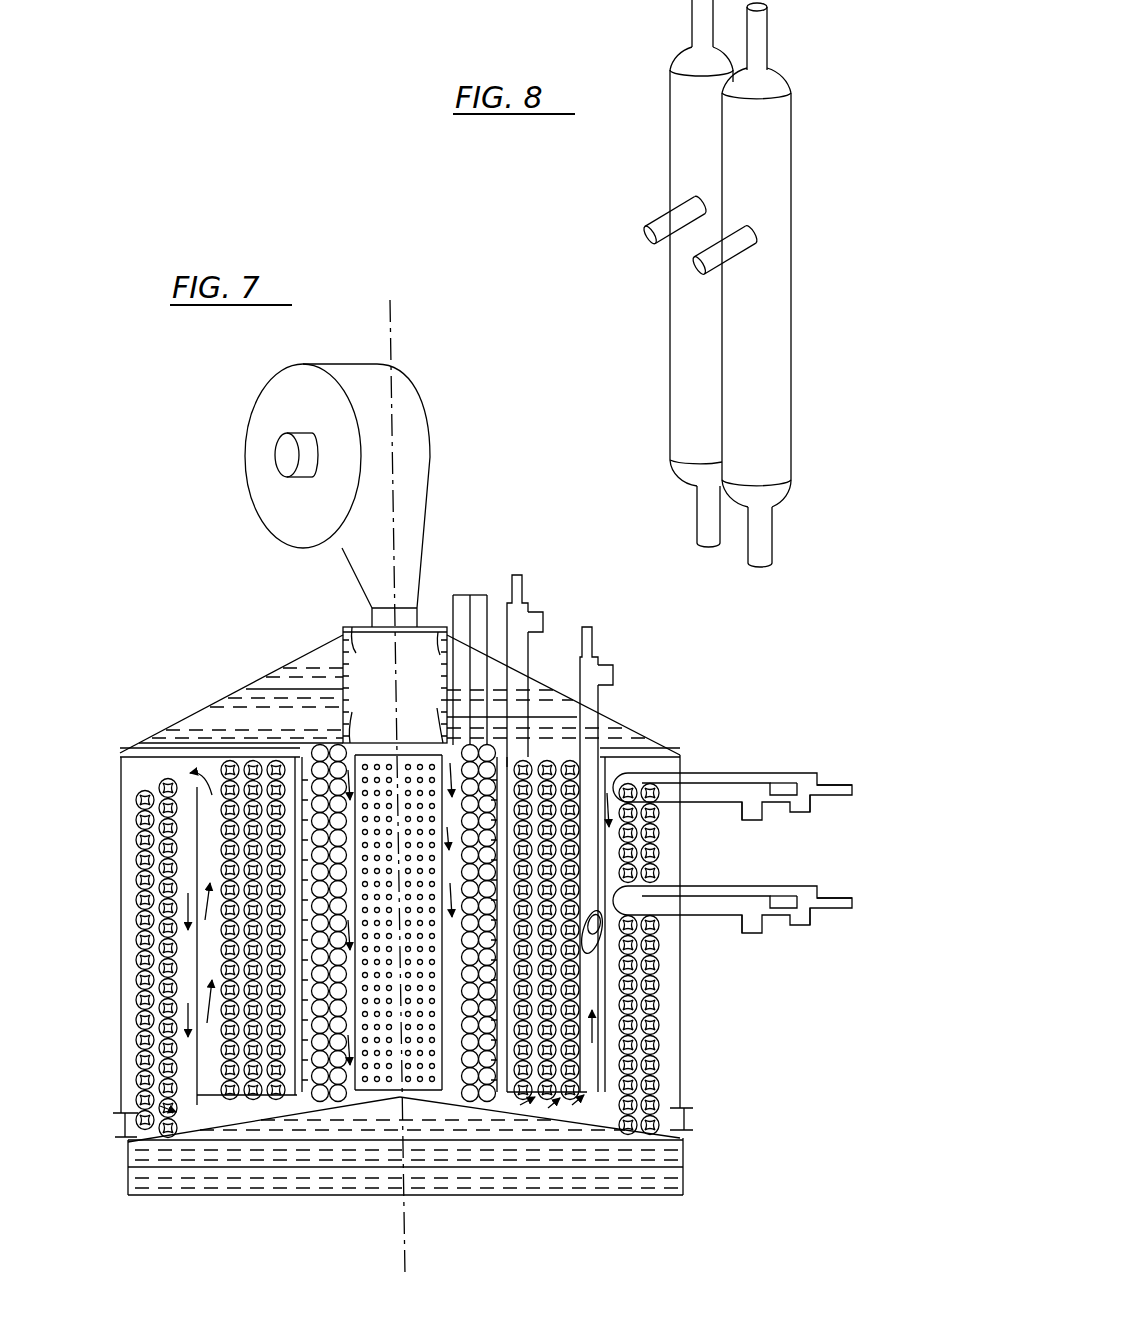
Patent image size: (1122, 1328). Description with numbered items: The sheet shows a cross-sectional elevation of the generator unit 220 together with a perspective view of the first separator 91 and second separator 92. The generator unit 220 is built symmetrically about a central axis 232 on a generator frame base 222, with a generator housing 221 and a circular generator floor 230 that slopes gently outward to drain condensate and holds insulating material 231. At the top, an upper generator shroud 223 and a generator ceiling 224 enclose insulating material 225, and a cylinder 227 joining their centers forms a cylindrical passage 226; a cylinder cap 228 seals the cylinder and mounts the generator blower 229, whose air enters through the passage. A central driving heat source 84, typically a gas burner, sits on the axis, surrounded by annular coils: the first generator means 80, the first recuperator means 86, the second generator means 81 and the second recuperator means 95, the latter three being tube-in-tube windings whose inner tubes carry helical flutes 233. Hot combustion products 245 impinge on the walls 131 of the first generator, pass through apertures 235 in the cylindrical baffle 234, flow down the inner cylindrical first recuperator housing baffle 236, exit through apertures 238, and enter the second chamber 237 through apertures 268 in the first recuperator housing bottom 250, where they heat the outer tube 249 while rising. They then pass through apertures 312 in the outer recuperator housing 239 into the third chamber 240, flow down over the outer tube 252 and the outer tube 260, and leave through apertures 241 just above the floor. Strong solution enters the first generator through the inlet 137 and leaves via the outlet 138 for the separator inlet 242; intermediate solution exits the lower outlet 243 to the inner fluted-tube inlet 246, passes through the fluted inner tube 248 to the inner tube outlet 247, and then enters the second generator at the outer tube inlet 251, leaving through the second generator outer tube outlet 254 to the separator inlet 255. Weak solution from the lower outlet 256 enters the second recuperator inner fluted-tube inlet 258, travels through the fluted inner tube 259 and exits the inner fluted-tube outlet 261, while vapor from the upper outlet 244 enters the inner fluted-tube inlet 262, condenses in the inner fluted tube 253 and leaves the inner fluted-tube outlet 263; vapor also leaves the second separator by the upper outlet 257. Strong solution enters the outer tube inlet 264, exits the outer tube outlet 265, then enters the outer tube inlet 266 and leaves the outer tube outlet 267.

In FIG. 7, the first generator means 80 is at (458, 1080).
In FIG. 7, the second generator means 81 is at (135, 785).
In FIG. 7, the central driving heat source 84 is at (392, 1080).
In FIG. 7, the first recuperator means 86 is at (217, 942).
In FIG. 8, the first separator 91 is at (780, 296).
In FIG. 8, the second separator 92 is at (688, 160).
In FIG. 7, the second recuperator means 95 is at (140, 1027).
In FIG. 7, the walls 131 is at (365, 1075).
In FIG. 7, the inlet 137 is at (478, 595).
In FIG. 7, the outlet 138 is at (460, 592).
In FIG. 7, the generator unit 220 is at (210, 543).
In FIG. 7, the generator housing 221 is at (121, 995).
In FIG. 7, the generator frame base 222 is at (518, 1197).
In FIG. 7, the upper generator shroud 223 is at (200, 712).
In FIG. 7, the generator ceiling 224 is at (155, 752).
In FIG. 7, the insulating material 225 is at (310, 700).
In FIG. 7, the cylindrical passage 226 is at (350, 640).
In FIG. 7, the cylinder 227 is at (335, 690).
In FIG. 7, the cylinder cap 228 is at (362, 650).
In FIG. 7, the generator blower 229 is at (283, 405).
In FIG. 7, the generator floor 230 is at (300, 1112).
In FIG. 7, the insulating material 231 is at (340, 1100).
In FIG. 7, the central axis 232 is at (407, 1263).
In FIG. 7, the helical flutes 233 is at (598, 930).
In FIG. 7, the cylindrical baffle 234 is at (322, 1110).
In FIG. 7, the apertures 235 is at (297, 752).
In FIG. 7, the inner cylindrical first recuperator housing baffle 236 is at (507, 773).
In FIG. 7, the second chamber 237 is at (127, 946).
In FIG. 7, the apertures 238 is at (300, 1120).
In FIG. 7, the outer recuperator housing 239 is at (210, 862).
In FIG. 7, the third chamber 240 is at (130, 860).
In FIG. 7, the apertures 241 is at (112, 1125).
In FIG. 8, the separator inlet 242 is at (712, 258).
In FIG. 8, the lower outlet 243 is at (762, 543).
In FIG. 8, the upper outlet 244 is at (760, 40).
In FIG. 7, the high-temperature air and combustion products 245 is at (297, 855).
In FIG. 7, the inner fluted-tube inlet 246 is at (518, 588).
In FIG. 7, the inner tube outlet 247 is at (590, 640).
In FIG. 7, the fluted inner tube 248 is at (573, 782).
In FIG. 7, the outer tube 249 is at (590, 800).
In FIG. 7, the first recuperator housing bottom 250 is at (565, 1080).
In FIG. 7, the outer tube inlet 251 is at (755, 818).
In FIG. 7, the outer tube 252 is at (660, 840).
In FIG. 7, the inner fluted tube 253 is at (652, 880).
In FIG. 7, the second generator outer tube outlet 254 is at (806, 805).
In FIG. 8, the separator inlet 255 is at (665, 220).
In FIG. 8, the lower outlet 256 is at (708, 518).
In FIG. 8, the upper outlet 257 is at (700, 16).
In FIG. 7, the second recuperator inner fluted-tube inlet 258 is at (835, 892).
In FIG. 7, the fluted inner tube 259 is at (658, 1060).
In FIG. 7, the outer tube 260 is at (688, 1115).
In FIG. 7, the inner fluted-tube outlet 261 is at (782, 912).
In FIG. 7, the inner fluted-tube inlet 262 is at (838, 778).
In FIG. 7, the inner fluted-tube outlet 263 is at (785, 790).
In FIG. 7, the outer tube inlet 264 is at (748, 935).
In FIG. 7, the outer tube outlet 265 is at (802, 915).
In FIG. 7, the outer tube inlet 266 is at (613, 675).
In FIG. 7, the outer tube outlet 267 is at (538, 620).
In FIG. 7, the apertures 268 is at (235, 1095).
In FIG. 7, the apertures 312 is at (140, 760).